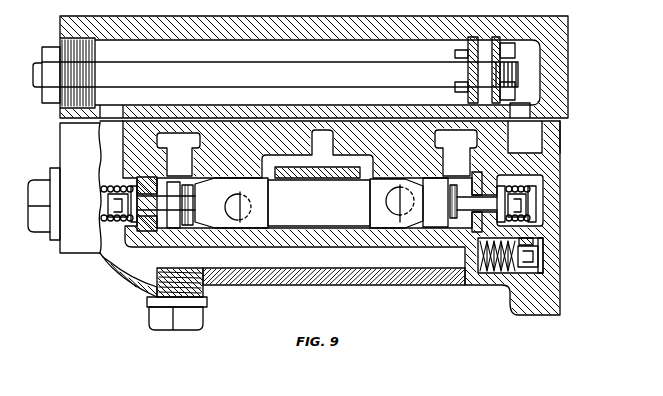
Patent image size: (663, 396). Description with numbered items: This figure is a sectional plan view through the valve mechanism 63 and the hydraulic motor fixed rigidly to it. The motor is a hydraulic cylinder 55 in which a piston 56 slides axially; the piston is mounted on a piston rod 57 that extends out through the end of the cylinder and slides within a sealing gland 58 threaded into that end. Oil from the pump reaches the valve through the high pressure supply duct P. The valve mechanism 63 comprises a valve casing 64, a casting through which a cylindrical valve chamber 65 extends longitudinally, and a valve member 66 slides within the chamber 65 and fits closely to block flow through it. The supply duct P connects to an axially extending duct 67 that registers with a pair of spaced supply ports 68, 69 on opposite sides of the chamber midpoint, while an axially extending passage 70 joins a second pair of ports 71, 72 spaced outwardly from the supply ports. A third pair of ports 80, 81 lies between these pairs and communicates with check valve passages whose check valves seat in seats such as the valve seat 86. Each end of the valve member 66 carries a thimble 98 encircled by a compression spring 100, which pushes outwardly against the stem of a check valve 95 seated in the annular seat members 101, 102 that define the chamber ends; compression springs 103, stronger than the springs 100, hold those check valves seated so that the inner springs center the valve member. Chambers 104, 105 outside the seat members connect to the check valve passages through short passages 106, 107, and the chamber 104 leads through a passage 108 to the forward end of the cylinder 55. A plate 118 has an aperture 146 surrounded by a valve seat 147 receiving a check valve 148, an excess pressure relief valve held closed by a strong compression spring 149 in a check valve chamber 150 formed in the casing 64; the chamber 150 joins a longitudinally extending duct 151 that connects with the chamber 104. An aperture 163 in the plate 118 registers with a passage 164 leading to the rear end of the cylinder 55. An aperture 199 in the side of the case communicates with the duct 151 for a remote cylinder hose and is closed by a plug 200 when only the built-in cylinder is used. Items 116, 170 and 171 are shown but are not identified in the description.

The hydraulic cylinder 55 is at (258, 40).
The piston 56 is at (468, 42).
The piston rod 57 is at (280, 74).
The sealing gland 58 is at (58, 48).
The valve mechanism 63 is at (104, 303).
The valve casing 64 is at (362, 285).
The valve chamber 65 is at (309, 203).
The valve member 66 is at (336, 230).
The axially extending duct 67 is at (317, 165).
The fluid supply port 68 is at (278, 197).
The fluid supply port 69 is at (365, 183).
The axially extending passage 70 is at (318, 140).
The port 71 is at (180, 163).
The port 72 is at (457, 163).
The port 80 is at (256, 211).
The port 81 is at (435, 202).
The valve seat 86 is at (548, 176).
The check valve 95 is at (101, 191).
The thimble 98 is at (192, 230).
The compression spring 100 is at (196, 201).
The annular seat member 101 is at (148, 233).
The annular seat member 102 is at (440, 253).
The compression spring 103 is at (110, 218).
The chamber 104 is at (105, 262).
The chamber 105 is at (545, 235).
The short passage 106 is at (110, 232).
The short passage 107 is at (556, 195).
The passage 108 is at (101, 152).
The body bottom 116 is at (532, 317).
The plate 118 is at (561, 306).
The aperture 146 is at (560, 262).
The valve seat 147 is at (545, 252).
The check valve 148 is at (523, 268).
The compression spring 149 is at (487, 274).
The check valve chamber 150 is at (482, 264).
The duct 151 is at (372, 232).
The aperture 163 is at (562, 142).
The passage 164 is at (526, 140).
The ball check 170 is at (240, 230).
The groove 171 is at (405, 232).
The aperture 199 is at (152, 322).
The plug 200 is at (205, 322).
The high pressure supply duct P is at (319, 142).